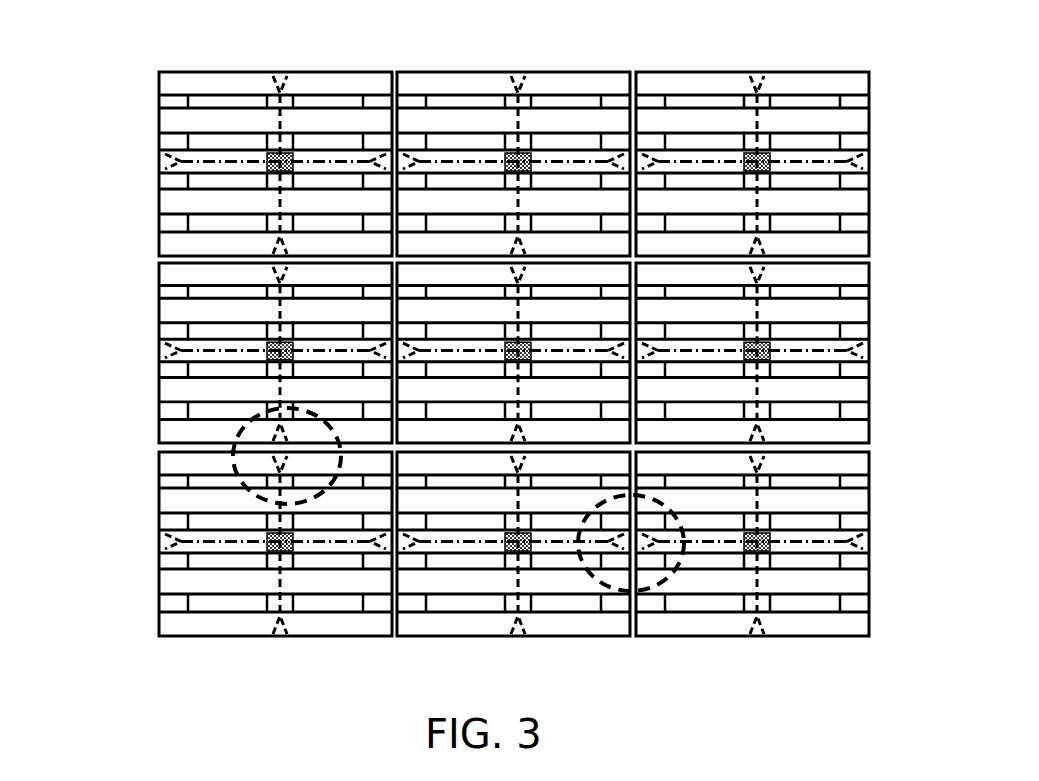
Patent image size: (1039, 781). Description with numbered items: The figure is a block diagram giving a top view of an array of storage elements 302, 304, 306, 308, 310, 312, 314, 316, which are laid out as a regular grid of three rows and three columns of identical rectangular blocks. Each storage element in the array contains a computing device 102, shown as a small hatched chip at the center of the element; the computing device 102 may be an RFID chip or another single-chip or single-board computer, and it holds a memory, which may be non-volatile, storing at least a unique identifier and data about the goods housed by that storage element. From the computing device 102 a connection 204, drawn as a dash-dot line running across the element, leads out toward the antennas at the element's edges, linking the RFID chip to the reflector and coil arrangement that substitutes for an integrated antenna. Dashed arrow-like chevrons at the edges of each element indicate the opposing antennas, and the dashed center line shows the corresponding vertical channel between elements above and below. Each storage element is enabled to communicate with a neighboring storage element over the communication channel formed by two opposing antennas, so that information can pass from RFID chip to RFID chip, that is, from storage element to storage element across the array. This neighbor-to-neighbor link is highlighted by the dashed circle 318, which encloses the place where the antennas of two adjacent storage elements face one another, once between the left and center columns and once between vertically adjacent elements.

The computing device 102 is at (294, 150).
The connection 204 is at (550, 547).
The storage element 302 is at (147, 98).
The storage element 304 is at (487, 85).
The storage element 306 is at (702, 85).
The storage element 308 is at (158, 318).
The storage element 310 is at (556, 308).
The storage element 312 is at (873, 355).
The storage element 314 is at (158, 510).
The storage element 316 is at (872, 503).
The circle 318 is at (278, 512).